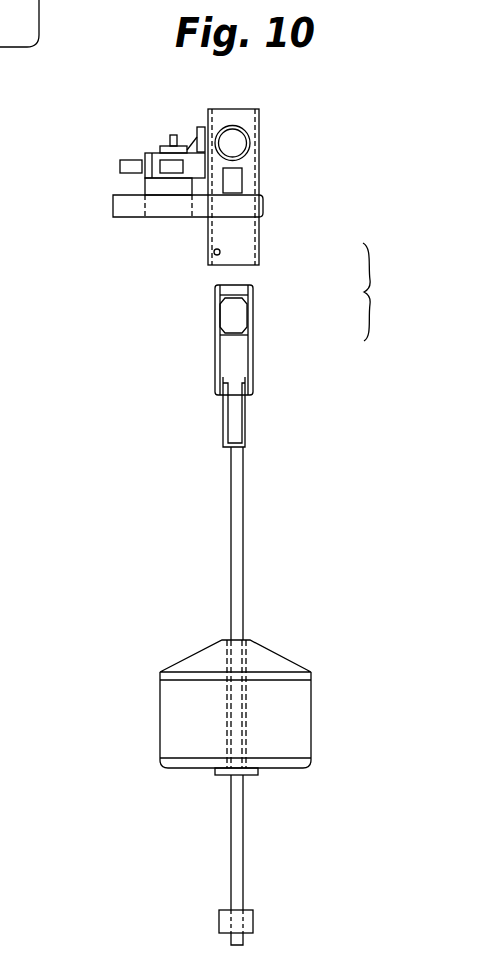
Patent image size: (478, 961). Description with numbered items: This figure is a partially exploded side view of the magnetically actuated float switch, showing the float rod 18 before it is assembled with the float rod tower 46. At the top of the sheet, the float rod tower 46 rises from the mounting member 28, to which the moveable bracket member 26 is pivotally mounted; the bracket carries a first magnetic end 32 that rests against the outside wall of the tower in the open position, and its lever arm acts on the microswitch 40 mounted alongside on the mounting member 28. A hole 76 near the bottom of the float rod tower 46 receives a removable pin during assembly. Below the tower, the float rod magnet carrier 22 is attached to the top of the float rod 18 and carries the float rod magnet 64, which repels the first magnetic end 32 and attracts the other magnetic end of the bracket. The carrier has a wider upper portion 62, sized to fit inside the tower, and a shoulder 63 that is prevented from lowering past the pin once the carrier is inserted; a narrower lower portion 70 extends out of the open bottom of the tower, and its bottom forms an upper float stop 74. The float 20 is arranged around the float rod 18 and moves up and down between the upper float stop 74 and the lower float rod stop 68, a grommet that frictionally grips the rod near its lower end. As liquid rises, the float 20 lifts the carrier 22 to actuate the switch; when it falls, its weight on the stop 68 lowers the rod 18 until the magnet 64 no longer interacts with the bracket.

The float rod 18 is at (237, 535).
The float 20 is at (306, 728).
The float rod magnet carrier 22 is at (203, 369).
The moveable bracket member 26 is at (201, 123).
The mounting member 28 is at (137, 183).
The first magnetic end 32 is at (239, 147).
The microswitch 40 is at (143, 150).
The float rod tower 46 is at (247, 113).
The wider upper portion 62 is at (236, 365).
The shoulder 63 is at (217, 396).
The float rod magnet 64 is at (237, 313).
The lower float rod stop 68 is at (254, 910).
The lower portion 70 is at (247, 417).
The upper float stop 74 is at (220, 448).
The hole 76 is at (214, 253).